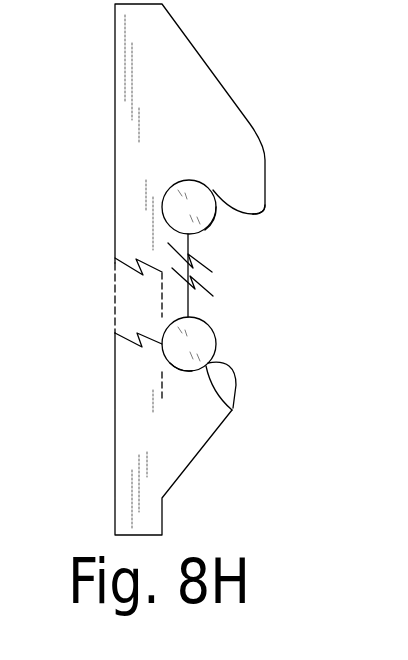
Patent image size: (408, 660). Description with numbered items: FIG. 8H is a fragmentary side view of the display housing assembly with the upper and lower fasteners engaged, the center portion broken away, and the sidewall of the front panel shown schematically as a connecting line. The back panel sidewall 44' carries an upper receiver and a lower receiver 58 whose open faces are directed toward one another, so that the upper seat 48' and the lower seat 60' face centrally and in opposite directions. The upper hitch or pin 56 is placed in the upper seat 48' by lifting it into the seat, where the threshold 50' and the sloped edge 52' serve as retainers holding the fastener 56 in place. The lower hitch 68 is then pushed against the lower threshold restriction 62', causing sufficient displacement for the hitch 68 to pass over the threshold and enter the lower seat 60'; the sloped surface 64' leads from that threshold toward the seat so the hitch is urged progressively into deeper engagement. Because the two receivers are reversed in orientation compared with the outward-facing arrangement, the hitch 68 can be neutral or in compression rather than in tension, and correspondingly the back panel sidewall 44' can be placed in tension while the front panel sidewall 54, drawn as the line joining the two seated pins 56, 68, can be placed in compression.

The back panel sidewall 44' is at (99, 286).
The upper seat 48' is at (189, 184).
The threshold 50' is at (285, 216).
The sloped edge 52' is at (264, 177).
The front panel sidewall 54 is at (188, 298).
The upper hitch or pin 56 is at (214, 212).
The lower seat 58 is at (121, 466).
The lower seat 60' is at (181, 397).
The lower threshold restriction 62' is at (256, 376).
The sloped surface 64' is at (240, 402).
The lower hitch 68 is at (203, 330).